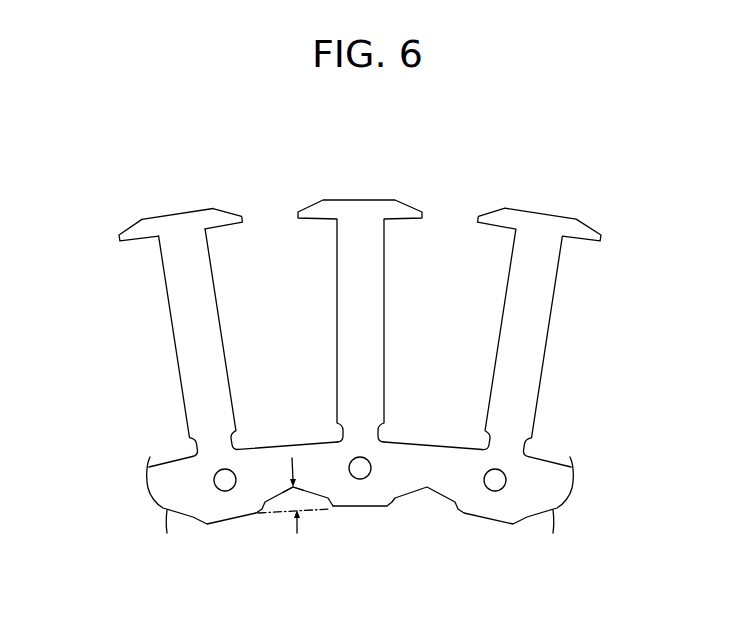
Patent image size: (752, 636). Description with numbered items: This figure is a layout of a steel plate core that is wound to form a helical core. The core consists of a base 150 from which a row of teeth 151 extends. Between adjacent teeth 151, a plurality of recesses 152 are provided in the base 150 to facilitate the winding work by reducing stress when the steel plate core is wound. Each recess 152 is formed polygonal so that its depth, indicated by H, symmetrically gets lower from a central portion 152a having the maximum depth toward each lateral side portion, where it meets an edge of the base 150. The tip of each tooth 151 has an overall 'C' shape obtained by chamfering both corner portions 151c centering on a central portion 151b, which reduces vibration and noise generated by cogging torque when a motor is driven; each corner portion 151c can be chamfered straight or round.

The base 150 is at (480, 507).
The teeth 151 is at (537, 337).
The central portion 151b is at (177, 210).
The corner portions 151c is at (132, 228).
The recess 152 is at (271, 509).
The central portion 152a is at (293, 487).
The protrusion height H is at (294, 497).